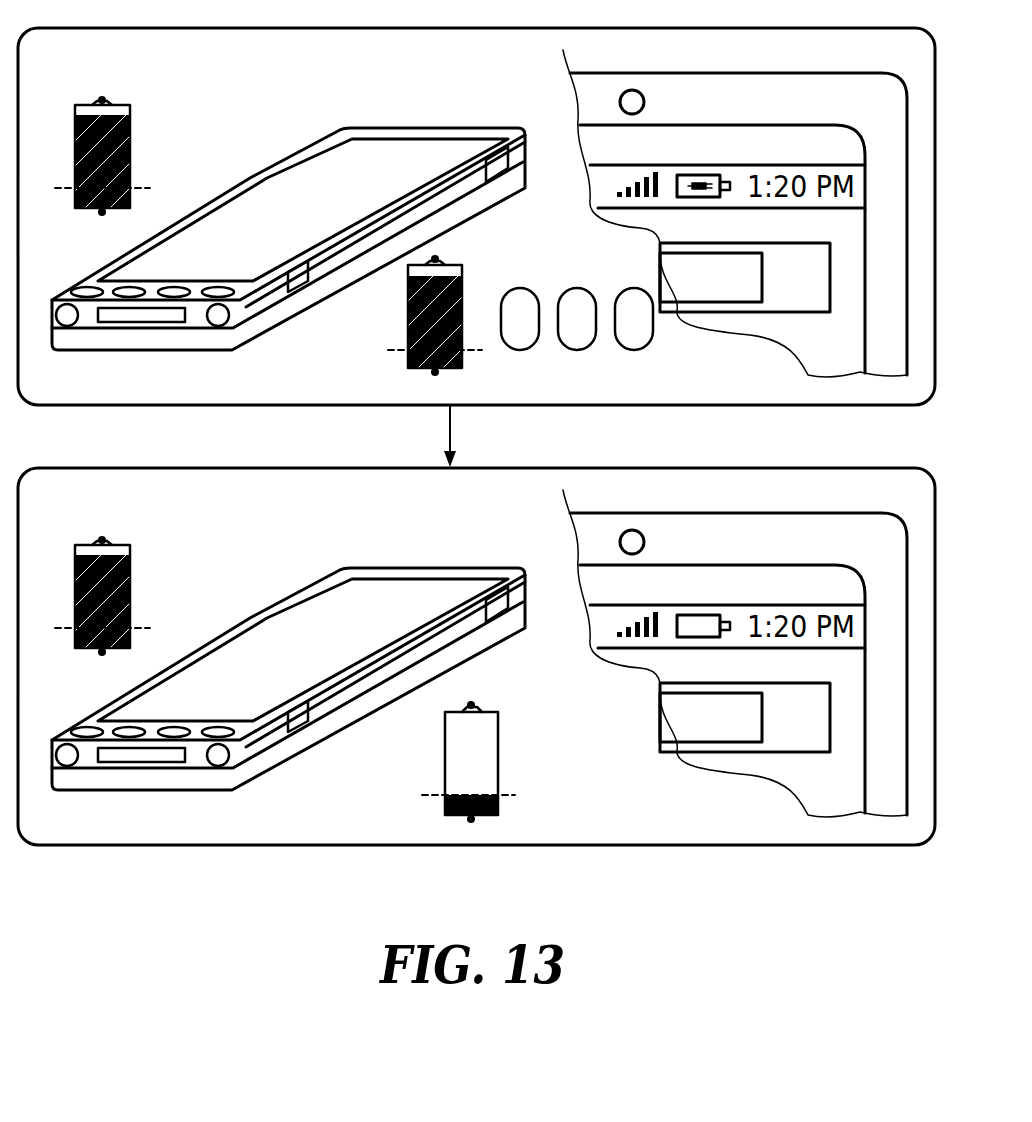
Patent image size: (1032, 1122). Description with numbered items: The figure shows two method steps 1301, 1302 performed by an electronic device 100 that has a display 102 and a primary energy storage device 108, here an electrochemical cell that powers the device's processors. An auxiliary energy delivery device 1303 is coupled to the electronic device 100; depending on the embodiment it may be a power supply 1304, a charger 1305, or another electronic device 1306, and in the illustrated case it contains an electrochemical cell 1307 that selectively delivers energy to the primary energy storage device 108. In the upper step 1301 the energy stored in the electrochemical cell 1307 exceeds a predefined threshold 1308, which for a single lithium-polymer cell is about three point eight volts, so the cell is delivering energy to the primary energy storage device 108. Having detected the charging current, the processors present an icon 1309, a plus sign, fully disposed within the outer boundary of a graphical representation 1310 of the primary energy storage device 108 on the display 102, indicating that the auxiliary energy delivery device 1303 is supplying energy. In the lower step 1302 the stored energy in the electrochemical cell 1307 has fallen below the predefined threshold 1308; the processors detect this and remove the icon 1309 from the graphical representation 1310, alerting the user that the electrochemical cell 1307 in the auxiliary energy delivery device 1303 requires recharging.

The electronic device 100 is at (288, 444).
The display 102 is at (343, 157).
The primary energy storage device 108 is at (131, 135).
The method step 1301 is at (628, 405).
The method step 1302 is at (737, 847).
The auxiliary energy delivery device 1303 is at (288, 310).
The power supply 1304 is at (520, 337).
The charger 1305 is at (575, 337).
The another electronic device 1306 is at (629, 337).
The electrochemical cell 1307 is at (462, 273).
The predefined threshold 1308 is at (405, 357).
The icon 1309 is at (702, 183).
The graphical representation 1310 is at (720, 175).